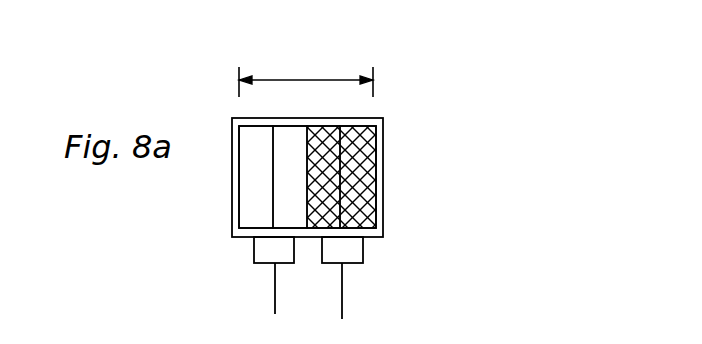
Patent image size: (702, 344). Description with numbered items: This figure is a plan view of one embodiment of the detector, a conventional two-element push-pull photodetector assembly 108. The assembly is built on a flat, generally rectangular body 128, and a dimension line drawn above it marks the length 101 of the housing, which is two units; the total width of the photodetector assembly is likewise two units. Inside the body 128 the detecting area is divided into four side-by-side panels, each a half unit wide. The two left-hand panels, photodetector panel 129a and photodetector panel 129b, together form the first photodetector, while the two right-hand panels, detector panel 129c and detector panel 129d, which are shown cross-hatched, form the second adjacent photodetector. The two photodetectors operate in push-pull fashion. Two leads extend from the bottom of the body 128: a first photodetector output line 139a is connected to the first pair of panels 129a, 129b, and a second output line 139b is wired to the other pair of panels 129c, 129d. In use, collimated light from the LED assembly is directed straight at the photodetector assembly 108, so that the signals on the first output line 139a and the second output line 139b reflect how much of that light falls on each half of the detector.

The photodetector assembly 108 is at (203, 118).
The length 101 is at (292, 80).
The body 128 is at (383, 128).
The photodetector panel 129a is at (250, 173).
The photodetector panel 129b is at (283, 213).
The detector panel 129c is at (330, 175).
The detector panel 129d is at (363, 202).
The first photodetector output line 139a is at (273, 288).
The second output line 139b is at (342, 294).